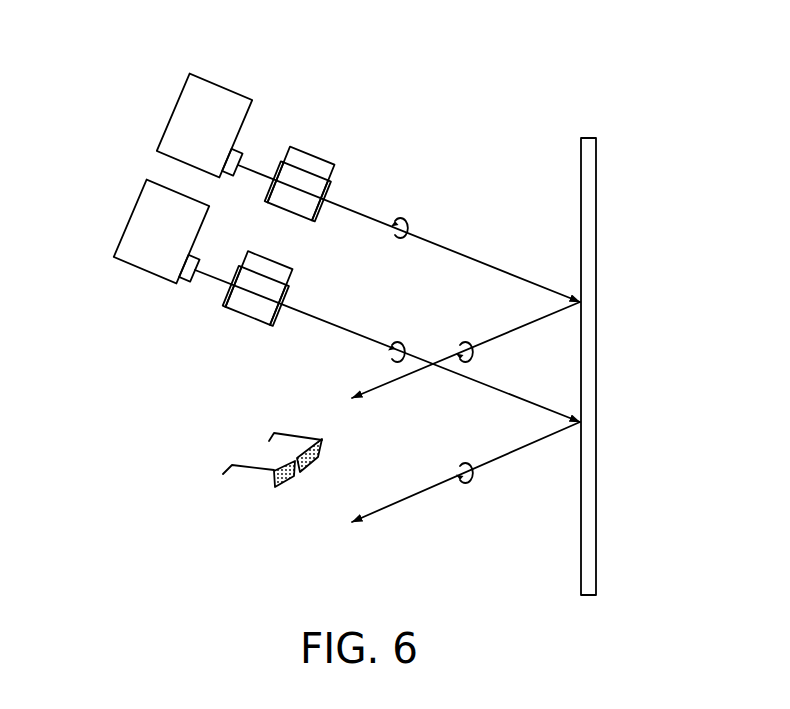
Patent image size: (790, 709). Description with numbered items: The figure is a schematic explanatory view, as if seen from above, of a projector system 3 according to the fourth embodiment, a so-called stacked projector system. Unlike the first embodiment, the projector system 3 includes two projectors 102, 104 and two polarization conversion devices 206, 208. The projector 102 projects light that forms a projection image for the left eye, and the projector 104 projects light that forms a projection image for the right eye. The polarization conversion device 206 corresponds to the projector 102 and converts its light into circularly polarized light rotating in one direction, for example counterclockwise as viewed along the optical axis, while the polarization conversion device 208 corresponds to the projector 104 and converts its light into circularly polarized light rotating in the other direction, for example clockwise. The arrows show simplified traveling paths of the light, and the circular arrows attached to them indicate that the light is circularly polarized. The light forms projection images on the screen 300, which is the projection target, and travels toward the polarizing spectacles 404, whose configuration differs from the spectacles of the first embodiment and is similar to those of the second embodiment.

The projector system 3 is at (641, 77).
The projector 102 is at (220, 85).
The projector 104 is at (143, 275).
The polarization conversion device 206 is at (316, 147).
The polarization conversion device 208 is at (244, 325).
The screen 300 is at (581, 185).
The polarizing spectacles 404 is at (303, 487).